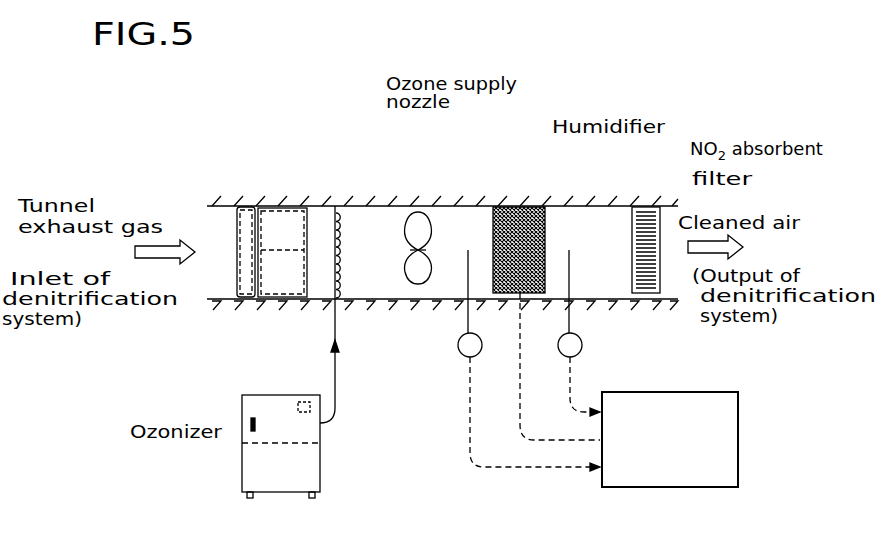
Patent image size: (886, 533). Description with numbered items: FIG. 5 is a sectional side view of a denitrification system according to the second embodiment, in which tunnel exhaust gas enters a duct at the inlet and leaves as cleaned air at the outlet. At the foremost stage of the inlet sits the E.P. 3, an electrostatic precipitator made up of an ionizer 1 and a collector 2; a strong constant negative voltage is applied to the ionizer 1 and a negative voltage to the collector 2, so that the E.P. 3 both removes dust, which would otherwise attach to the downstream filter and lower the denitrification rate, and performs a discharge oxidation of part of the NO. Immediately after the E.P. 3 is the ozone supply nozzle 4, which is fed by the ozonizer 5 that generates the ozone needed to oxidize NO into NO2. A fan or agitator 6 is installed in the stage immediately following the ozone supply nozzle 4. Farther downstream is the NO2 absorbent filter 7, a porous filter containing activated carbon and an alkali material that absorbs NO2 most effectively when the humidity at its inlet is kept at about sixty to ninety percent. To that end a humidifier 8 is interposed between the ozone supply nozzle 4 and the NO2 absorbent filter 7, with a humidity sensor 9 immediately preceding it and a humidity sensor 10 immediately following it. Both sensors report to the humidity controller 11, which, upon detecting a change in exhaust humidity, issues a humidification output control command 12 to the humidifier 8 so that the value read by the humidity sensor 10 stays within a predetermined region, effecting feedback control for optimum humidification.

The ionizer 1 is at (247, 206).
The collector 2 is at (287, 221).
The E.P. (electrostatic precipitator) 3 is at (238, 143).
The ozone supply nozzle 4 is at (343, 223).
The ozonizer 5 is at (253, 412).
The fan or agitator 6 is at (428, 212).
The NO2 absorbent filter 7 is at (651, 206).
The humidifier 8 is at (524, 207).
The humidity sensor 9 is at (458, 345).
The humidity sensor 10 is at (582, 345).
The humidity controller 11 is at (683, 397).
The humidification output control command 12 is at (520, 355).